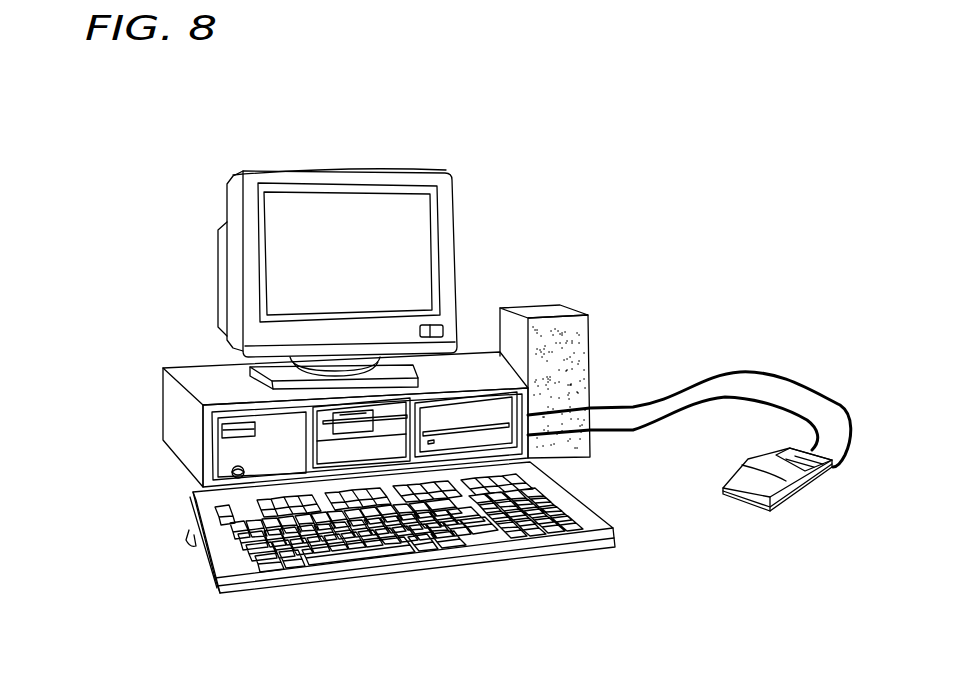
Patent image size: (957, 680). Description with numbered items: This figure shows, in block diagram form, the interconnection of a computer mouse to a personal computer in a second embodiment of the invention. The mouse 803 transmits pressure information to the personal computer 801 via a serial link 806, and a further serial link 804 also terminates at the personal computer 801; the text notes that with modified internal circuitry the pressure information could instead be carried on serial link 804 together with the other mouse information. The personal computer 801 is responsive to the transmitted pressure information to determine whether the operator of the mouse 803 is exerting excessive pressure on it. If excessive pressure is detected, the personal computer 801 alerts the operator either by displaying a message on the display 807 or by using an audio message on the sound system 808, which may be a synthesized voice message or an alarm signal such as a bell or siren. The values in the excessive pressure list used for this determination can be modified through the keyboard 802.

The personal computer 801 is at (163, 403).
The keyboard 802 is at (215, 590).
The mouse 803 is at (793, 503).
The serial link 804 is at (735, 372).
The serial link 806 is at (633, 430).
The display 807 is at (337, 168).
The sound system 808 is at (545, 308).